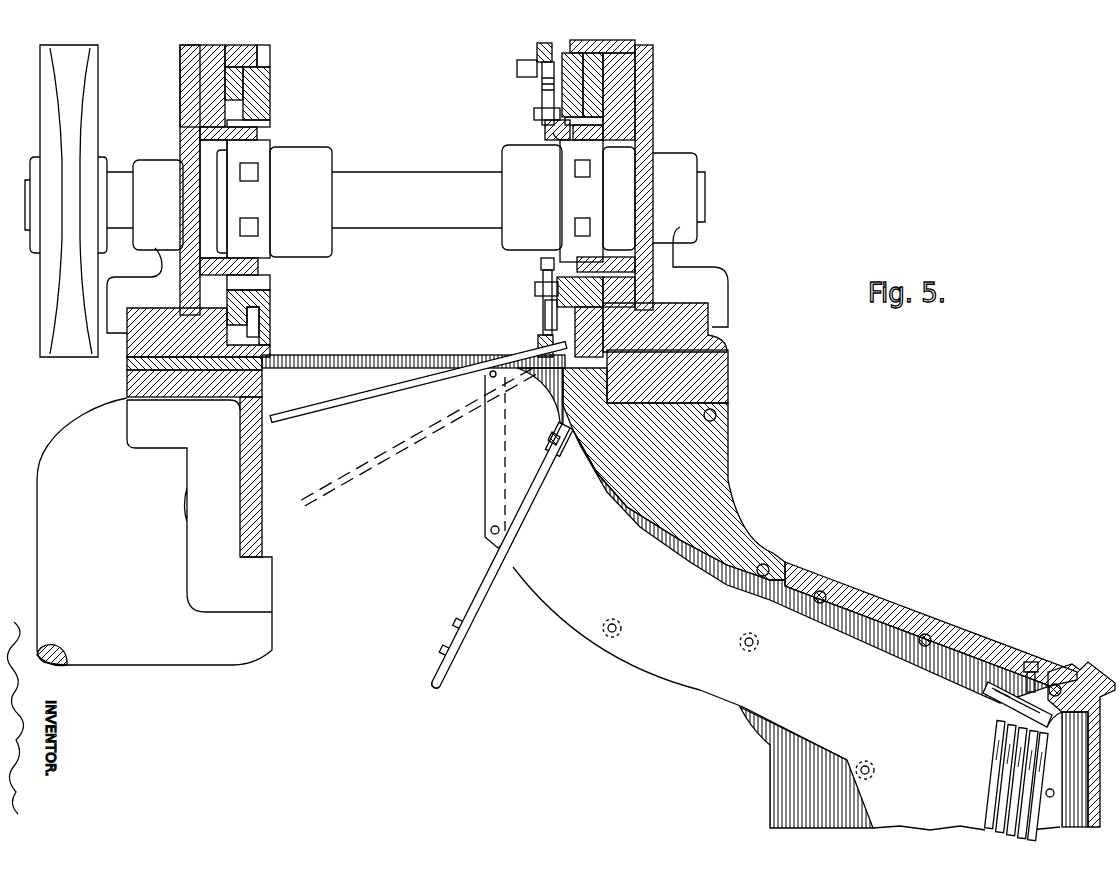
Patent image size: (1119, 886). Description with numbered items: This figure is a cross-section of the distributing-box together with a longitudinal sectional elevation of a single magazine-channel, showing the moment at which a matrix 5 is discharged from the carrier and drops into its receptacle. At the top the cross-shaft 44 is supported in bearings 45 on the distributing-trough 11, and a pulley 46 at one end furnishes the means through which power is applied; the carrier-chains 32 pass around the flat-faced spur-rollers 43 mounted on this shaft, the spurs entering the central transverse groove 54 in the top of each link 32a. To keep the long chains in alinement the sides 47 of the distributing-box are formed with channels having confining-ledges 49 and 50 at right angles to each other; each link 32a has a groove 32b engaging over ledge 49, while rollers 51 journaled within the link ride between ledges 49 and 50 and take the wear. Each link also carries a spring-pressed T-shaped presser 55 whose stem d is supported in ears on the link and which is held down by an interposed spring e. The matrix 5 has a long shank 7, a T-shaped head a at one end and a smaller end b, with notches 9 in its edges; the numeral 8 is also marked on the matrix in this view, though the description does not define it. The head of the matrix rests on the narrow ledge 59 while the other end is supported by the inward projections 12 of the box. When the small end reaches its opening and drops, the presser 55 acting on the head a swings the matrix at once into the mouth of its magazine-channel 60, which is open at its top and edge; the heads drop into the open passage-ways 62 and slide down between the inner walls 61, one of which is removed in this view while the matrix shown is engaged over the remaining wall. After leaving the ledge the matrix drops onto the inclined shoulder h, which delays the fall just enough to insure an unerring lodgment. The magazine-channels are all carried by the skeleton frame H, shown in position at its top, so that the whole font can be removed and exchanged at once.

The matrix 5 is at (437, 382).
The body portion or shank 7 is at (492, 596).
The blade clamp head 8 is at (566, 468).
The notches or recesses 9 is at (466, 642).
The distributing-trough 11 is at (654, 58).
The inward projections 12 is at (340, 356).
The carrier-chain 32 is at (544, 314).
The link 32a is at (272, 110).
The channel or groove 32b is at (272, 93).
The flat-faced spur-roller 43 is at (272, 216).
The cross-shaft 44 is at (417, 200).
The bearing 45 is at (145, 163).
The pulley 46 is at (66, 201).
The side of the distributing-box 47 is at (182, 203).
The confining-ledge 49 is at (272, 60).
The confining-ledge 50 is at (258, 136).
The roller 51 is at (552, 138).
The central transverse groove 54 is at (272, 285).
The spring-pressed T-shaped presser 55 is at (537, 49).
The narrow ledge 59 is at (728, 373).
The magazine-channel 60 is at (814, 698).
The inner wall 61 is at (678, 553).
The open passage-way 62 is at (622, 512).
The magazine-frame H is at (730, 397).
The head a is at (530, 382).
The smaller end b is at (432, 662).
The stem d is at (540, 88).
The spring e is at (534, 113).
The inclined shoulder h is at (547, 400).